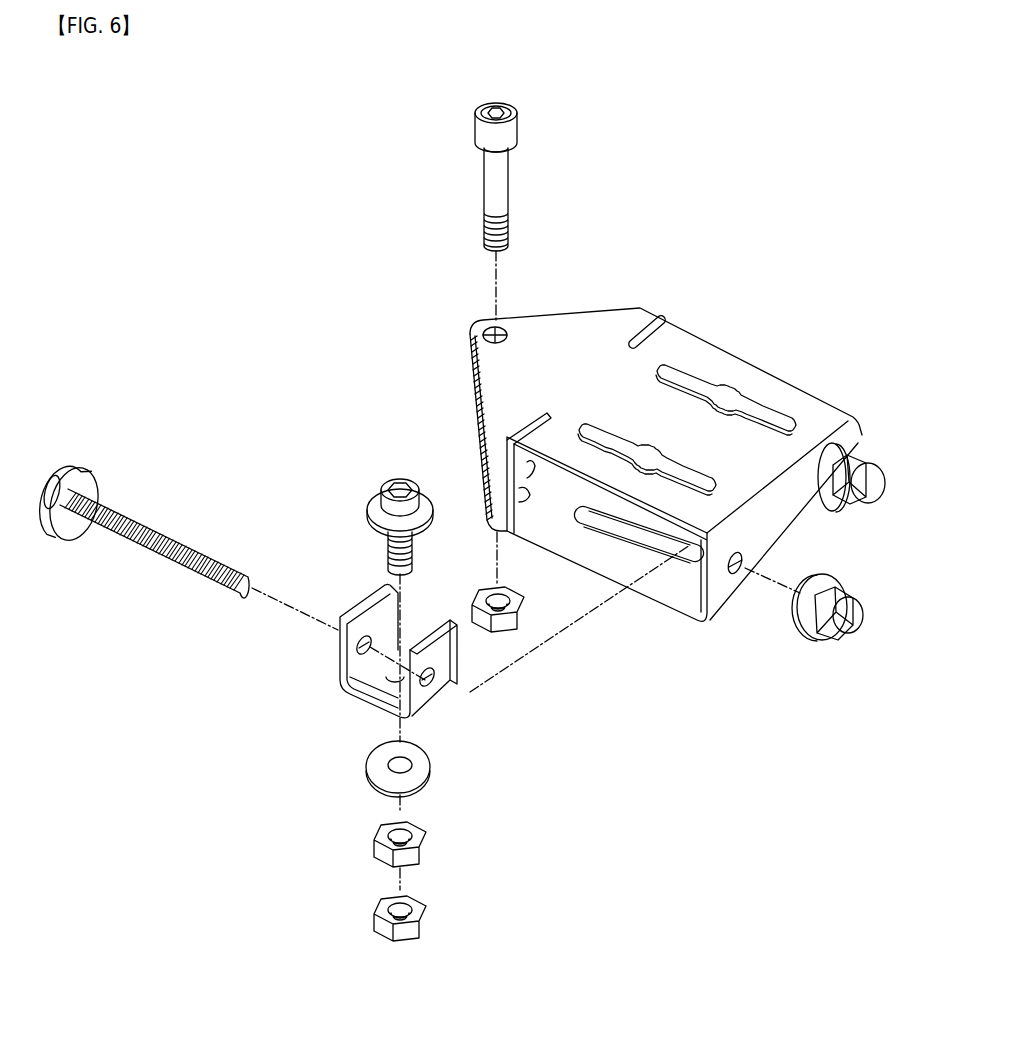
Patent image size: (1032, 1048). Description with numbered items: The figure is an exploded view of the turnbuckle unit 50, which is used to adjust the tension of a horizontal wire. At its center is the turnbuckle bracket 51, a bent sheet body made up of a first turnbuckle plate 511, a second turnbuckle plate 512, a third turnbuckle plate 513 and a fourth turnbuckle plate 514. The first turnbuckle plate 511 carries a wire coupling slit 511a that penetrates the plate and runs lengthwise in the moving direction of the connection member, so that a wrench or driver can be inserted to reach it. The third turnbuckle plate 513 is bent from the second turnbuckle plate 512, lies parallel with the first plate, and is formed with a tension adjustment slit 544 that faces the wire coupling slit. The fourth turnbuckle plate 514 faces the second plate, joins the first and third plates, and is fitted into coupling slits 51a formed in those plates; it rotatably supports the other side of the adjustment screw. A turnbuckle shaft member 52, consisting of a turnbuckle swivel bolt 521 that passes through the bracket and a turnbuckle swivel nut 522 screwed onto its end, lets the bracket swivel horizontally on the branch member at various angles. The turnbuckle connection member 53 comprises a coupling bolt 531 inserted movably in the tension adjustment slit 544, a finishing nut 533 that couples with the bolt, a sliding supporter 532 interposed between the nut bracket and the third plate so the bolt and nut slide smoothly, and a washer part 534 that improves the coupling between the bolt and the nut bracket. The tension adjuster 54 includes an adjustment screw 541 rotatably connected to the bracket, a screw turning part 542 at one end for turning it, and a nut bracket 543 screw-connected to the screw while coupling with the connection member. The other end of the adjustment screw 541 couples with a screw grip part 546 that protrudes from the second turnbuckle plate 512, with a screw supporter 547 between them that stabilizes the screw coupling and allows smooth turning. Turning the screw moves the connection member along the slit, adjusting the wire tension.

The turnbuckle unit 50 is at (193, 304).
The turnbuckle bracket 51 is at (647, 462).
The coupling slits 51a is at (530, 427).
The first turnbuckle plate 511 is at (667, 386).
The wire coupling slit 511a is at (697, 377).
The second turnbuckle plate 512 is at (800, 519).
The third turnbuckle plate 513 is at (607, 565).
The fourth turnbuckle plate 514 is at (527, 495).
The turnbuckle shaft member 52 is at (507, 202).
The turnbuckle swivel bolt 521 is at (489, 181).
The turnbuckle swivel nut 522 is at (506, 593).
The turnbuckle connection member 53 is at (370, 654).
The coupling bolt 531 is at (402, 485).
The sliding supporter 532 is at (377, 757).
The finishing nut 533 is at (383, 898).
The washer part 534 is at (376, 516).
The tension adjuster 54 is at (361, 564).
The adjustment screw 541 is at (140, 521).
The screw turning part 542 is at (58, 472).
The nut bracket 543 is at (370, 602).
The tension adjustment slit 544 is at (697, 565).
The screw grip part 546 is at (847, 576).
The screw supporter 547 is at (815, 640).